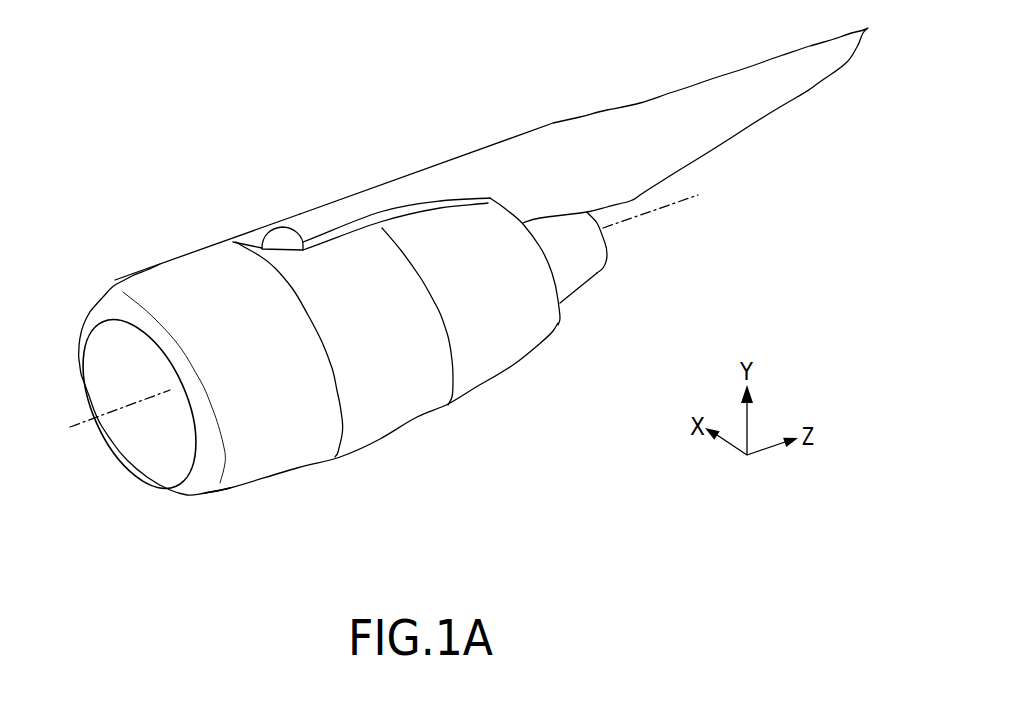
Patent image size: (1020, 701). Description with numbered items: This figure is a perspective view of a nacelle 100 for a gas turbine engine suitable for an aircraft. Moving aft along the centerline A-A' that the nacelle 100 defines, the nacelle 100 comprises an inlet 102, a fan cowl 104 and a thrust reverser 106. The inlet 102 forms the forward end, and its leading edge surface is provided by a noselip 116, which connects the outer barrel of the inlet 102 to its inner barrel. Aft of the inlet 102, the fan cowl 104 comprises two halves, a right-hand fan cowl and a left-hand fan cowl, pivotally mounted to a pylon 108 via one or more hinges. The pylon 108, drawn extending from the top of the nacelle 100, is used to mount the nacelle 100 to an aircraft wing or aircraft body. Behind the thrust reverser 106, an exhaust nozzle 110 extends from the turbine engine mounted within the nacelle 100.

The nacelle 100 is at (180, 86).
The inlet 102 is at (157, 293).
The fan cowl 104 is at (423, 402).
The thrust reverser 106 is at (503, 352).
The pylon 108 is at (505, 153).
The exhaust nozzle 110 is at (583, 265).
The noselip 116 is at (202, 458).